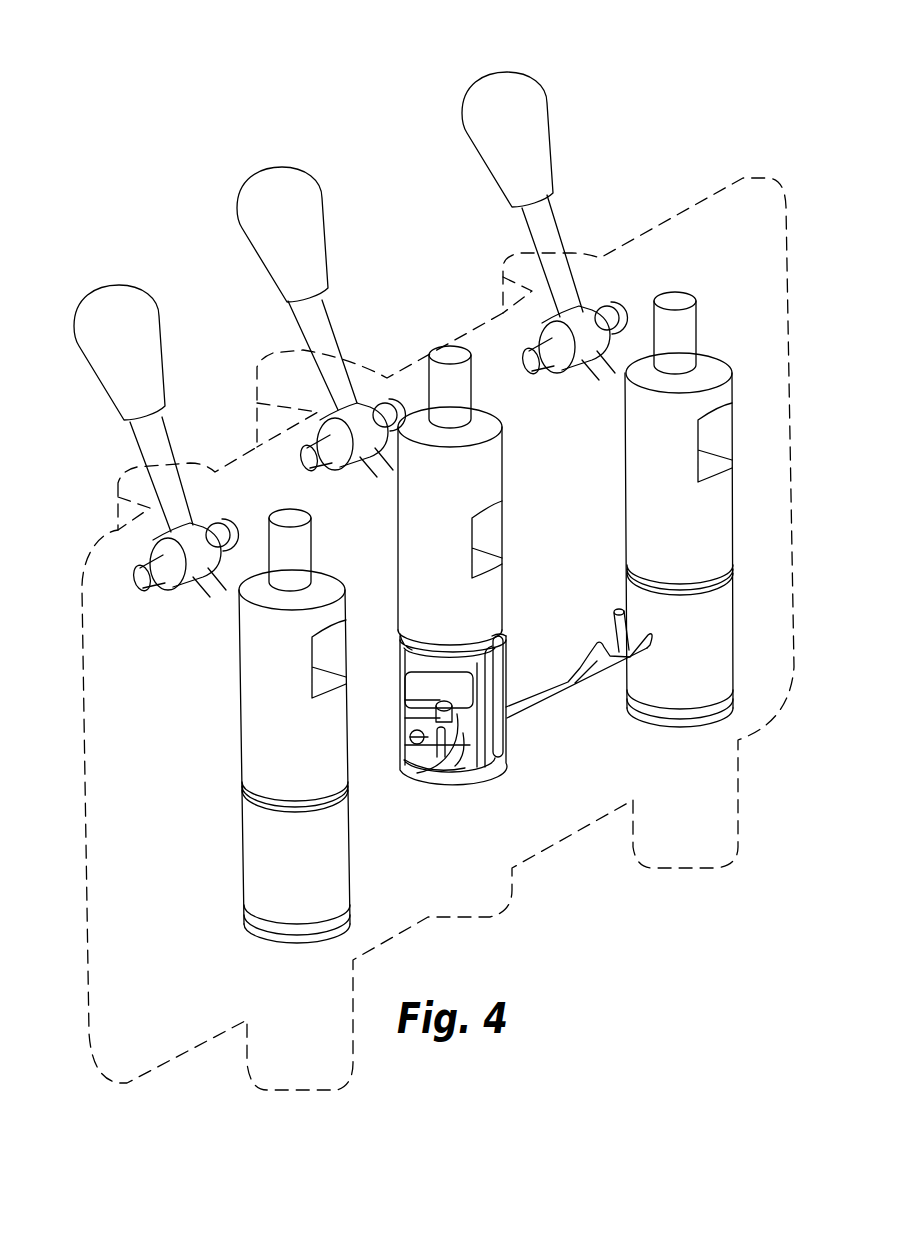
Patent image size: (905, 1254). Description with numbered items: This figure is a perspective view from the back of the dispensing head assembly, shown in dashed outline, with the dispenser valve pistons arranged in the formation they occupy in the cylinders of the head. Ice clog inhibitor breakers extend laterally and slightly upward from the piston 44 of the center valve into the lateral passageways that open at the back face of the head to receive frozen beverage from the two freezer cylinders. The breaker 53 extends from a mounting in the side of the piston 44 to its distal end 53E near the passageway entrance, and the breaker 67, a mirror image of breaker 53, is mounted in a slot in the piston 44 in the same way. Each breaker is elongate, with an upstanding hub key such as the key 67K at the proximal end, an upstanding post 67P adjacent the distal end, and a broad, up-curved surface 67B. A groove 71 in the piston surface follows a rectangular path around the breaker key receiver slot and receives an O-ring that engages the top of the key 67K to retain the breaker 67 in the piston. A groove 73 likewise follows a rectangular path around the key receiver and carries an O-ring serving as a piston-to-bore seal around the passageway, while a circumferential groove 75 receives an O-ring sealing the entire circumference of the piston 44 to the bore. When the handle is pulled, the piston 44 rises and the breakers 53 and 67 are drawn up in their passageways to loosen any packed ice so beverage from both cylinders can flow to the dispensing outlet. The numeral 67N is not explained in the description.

The piston 44 is at (482, 472).
The circumferential groove 75 is at (505, 636).
The groove 71 is at (483, 687).
The groove 73 is at (487, 742).
The breaker 53 is at (538, 693).
The distal end 53E is at (653, 640).
The breaker 67 is at (412, 772).
The key 67K is at (440, 715).
The adjustment nut 67N is at (418, 737).
The upstanding post 67P is at (427, 748).
The up-curved surface 67B is at (466, 770).